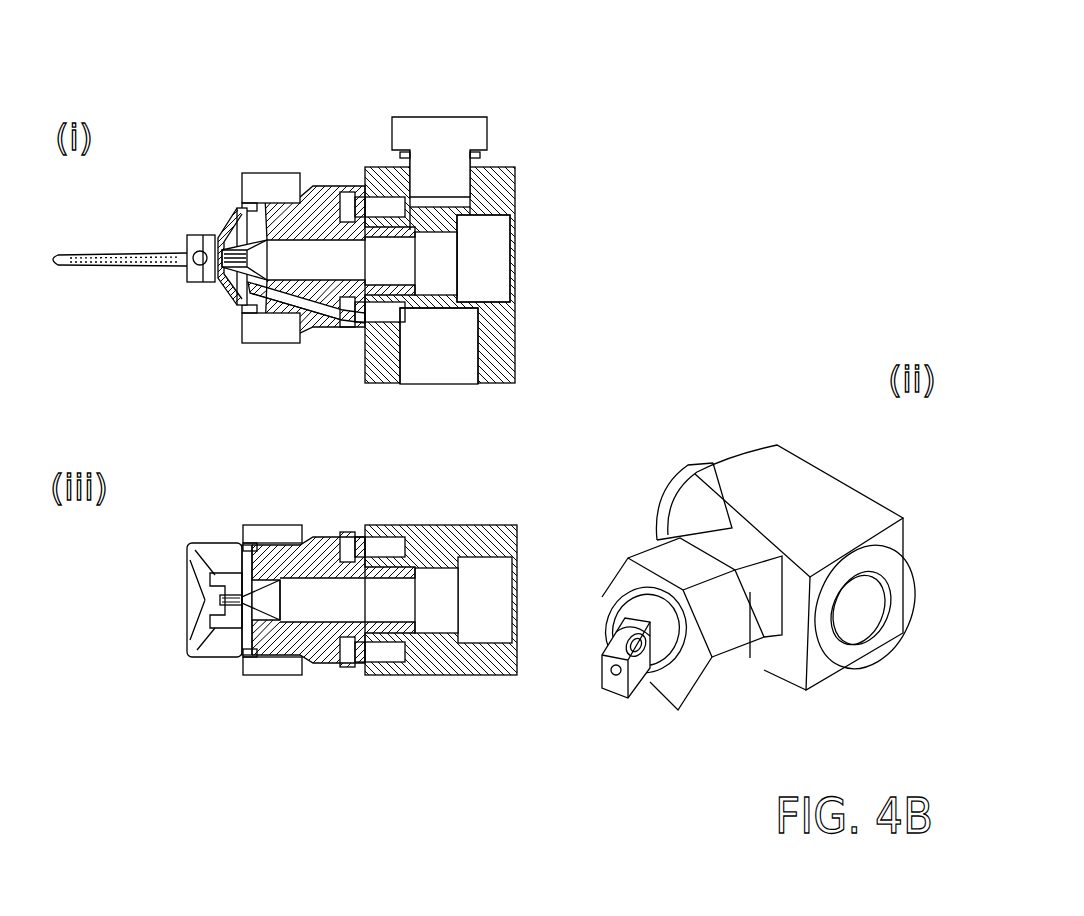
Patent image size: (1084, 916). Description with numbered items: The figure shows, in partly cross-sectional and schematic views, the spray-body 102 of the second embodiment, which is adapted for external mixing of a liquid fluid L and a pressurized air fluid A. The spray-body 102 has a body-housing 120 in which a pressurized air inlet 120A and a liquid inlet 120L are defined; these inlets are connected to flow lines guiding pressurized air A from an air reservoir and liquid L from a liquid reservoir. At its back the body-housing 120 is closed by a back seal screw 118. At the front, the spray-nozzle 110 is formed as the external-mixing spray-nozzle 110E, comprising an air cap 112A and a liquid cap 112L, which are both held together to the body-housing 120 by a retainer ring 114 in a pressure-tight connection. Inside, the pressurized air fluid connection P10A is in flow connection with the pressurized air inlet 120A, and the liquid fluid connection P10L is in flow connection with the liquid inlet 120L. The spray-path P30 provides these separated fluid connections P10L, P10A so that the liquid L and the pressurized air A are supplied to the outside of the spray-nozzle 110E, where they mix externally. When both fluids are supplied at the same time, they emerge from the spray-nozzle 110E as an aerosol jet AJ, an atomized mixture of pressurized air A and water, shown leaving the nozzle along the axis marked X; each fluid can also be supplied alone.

The spray-body 102 is at (355, 100).
The spray-nozzle 110 is at (598, 555).
The spray-nozzle 110E is at (157, 160).
The air cap 112A is at (222, 232).
The liquid cap 112L is at (322, 190).
The retainer ring 114 is at (262, 185).
The back seal screw 118 is at (457, 128).
The body-housing 120 is at (505, 190).
The liquid inlet 120L is at (495, 248).
The pressurized air inlet 120A is at (428, 365).
The pressurized air fluid connection P10A is at (278, 325).
The liquid fluid connection P10L is at (295, 610).
The spray-path P30 is at (207, 600).
The liquid L is at (545, 262).
The pressurized air A is at (436, 385).
The irradiation axis X is at (55, 250).
The aerosol jet AJ is at (110, 268).